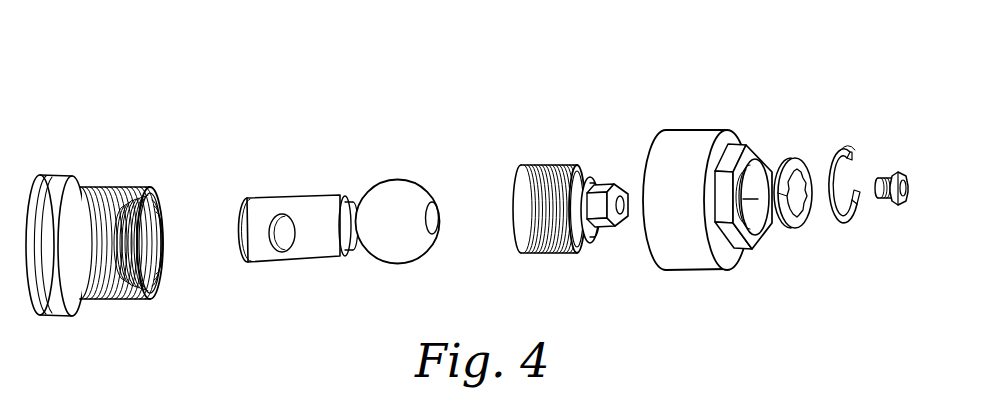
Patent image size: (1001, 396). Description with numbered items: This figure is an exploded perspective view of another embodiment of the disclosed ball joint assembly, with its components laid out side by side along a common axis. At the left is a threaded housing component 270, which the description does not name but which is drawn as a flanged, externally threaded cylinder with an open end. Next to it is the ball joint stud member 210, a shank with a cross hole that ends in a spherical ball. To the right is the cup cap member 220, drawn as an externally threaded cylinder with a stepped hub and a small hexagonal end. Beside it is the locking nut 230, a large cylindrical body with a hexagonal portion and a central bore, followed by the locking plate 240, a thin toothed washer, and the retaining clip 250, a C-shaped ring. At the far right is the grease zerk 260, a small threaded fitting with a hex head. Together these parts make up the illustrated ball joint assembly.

The threaded housing fitting 270 is at (99, 150).
The ball joint stud member 210 is at (320, 172).
The cup cap member 220 is at (546, 140).
The locking nut 230 is at (696, 108).
The locking plate 240 is at (791, 136).
The retaining clip 250 is at (835, 130).
The grease zerk 260 is at (909, 155).